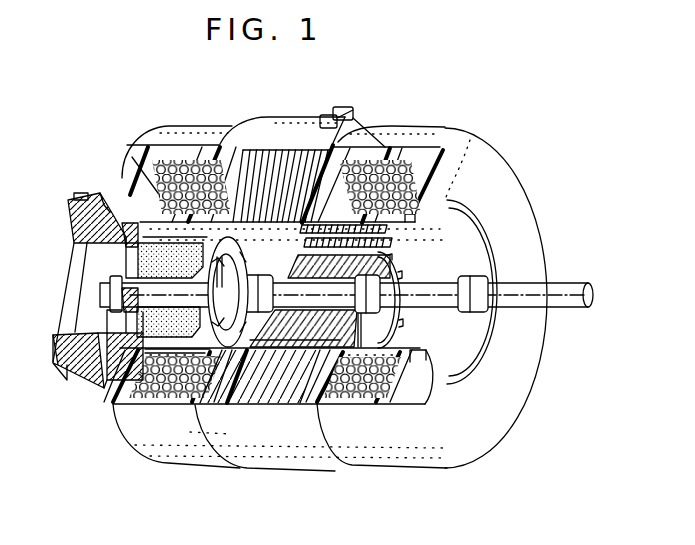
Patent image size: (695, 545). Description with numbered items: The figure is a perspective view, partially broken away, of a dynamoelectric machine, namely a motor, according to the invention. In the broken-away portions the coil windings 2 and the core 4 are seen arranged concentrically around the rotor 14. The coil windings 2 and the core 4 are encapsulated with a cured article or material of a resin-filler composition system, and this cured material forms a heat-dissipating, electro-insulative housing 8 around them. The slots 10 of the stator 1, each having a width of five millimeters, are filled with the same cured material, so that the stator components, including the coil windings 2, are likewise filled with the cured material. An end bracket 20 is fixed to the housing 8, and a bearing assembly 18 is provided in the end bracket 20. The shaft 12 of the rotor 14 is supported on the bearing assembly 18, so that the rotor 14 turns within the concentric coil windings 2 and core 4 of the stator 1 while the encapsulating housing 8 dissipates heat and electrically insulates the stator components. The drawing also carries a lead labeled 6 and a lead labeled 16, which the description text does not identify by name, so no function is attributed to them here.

The stator 1 is at (427, 471).
The coil windings 2 is at (182, 158).
The core 4 is at (278, 152).
The terminal 6 is at (341, 108).
The housing 8 is at (397, 158).
The slots 10 is at (383, 235).
The shaft 12 is at (571, 294).
The rotor 14 is at (380, 323).
The bearing retainer 16 is at (133, 327).
The bearing assembly 18 is at (93, 298).
The end bracket 20 is at (119, 196).